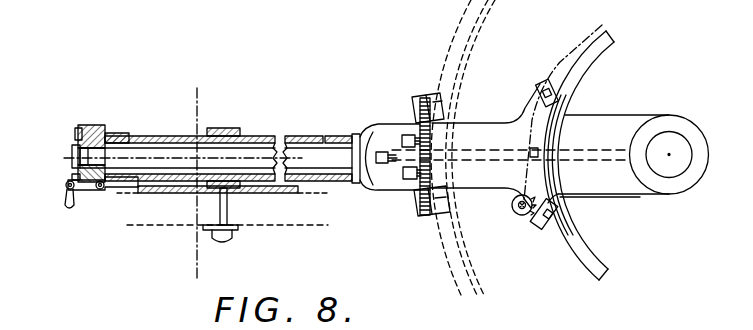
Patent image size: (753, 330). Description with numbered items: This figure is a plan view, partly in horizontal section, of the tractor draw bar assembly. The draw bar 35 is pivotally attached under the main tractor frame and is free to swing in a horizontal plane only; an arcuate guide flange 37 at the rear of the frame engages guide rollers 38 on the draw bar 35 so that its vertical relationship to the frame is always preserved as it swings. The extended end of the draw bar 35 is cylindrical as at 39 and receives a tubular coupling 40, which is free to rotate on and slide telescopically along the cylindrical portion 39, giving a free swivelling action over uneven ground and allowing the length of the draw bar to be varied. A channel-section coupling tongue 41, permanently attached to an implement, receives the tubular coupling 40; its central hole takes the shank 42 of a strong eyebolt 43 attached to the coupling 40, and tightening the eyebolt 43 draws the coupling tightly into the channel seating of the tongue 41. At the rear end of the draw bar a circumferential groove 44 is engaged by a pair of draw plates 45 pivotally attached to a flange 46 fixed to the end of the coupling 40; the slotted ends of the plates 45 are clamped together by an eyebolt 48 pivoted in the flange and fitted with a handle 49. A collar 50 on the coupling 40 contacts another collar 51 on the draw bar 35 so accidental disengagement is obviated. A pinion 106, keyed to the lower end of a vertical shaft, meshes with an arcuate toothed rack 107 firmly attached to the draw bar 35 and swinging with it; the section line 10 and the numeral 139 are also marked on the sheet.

The section line 10 is at (213, 185).
The draw bar 35 is at (478, 133).
The arcuate guide flange 37 is at (458, 25).
The guide rollers 38 is at (428, 97).
The cylindrical portion 39 is at (303, 152).
The tubular coupling 40 is at (333, 182).
The coupling tongue 41 is at (167, 194).
The shank 42 is at (229, 206).
The eyebolt 43 is at (226, 128).
The circumferential groove 44 is at (72, 147).
The draw plates 45 is at (72, 179).
The flange 46 is at (97, 126).
The eyebolt 48 is at (99, 191).
The handle 49 is at (70, 206).
The collar 50 is at (337, 134).
The collar 51 is at (120, 134).
The pinion 106 is at (518, 218).
The arcuate toothed rack 107 is at (563, 203).
The arm 139 is at (630, 321).